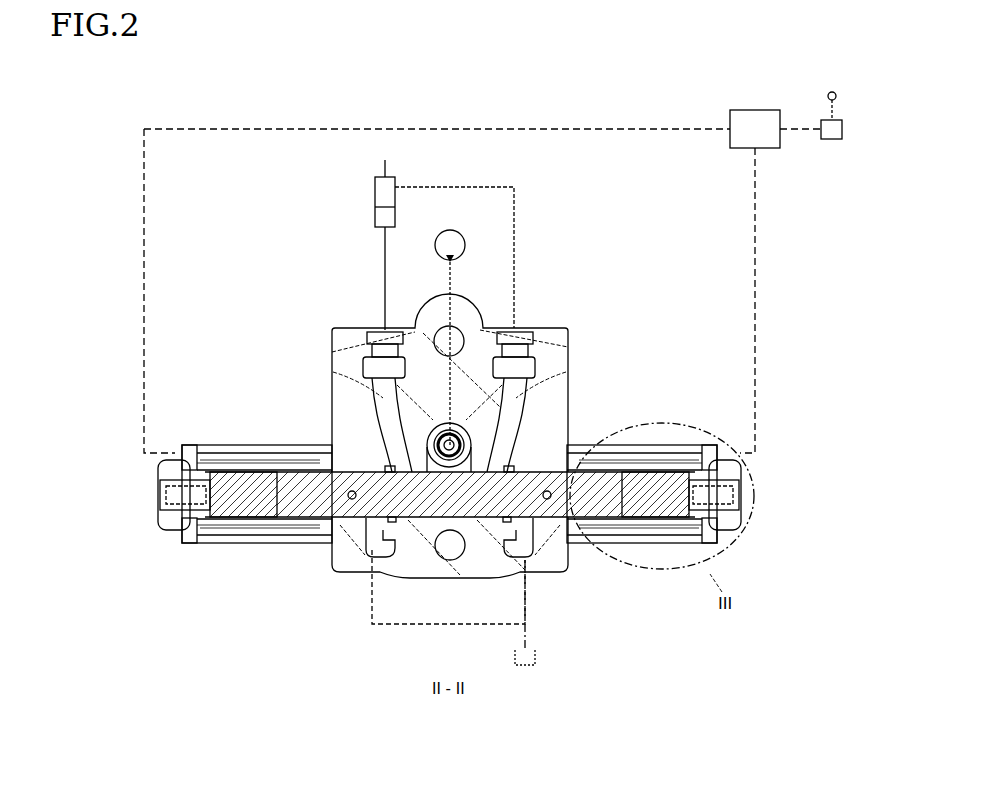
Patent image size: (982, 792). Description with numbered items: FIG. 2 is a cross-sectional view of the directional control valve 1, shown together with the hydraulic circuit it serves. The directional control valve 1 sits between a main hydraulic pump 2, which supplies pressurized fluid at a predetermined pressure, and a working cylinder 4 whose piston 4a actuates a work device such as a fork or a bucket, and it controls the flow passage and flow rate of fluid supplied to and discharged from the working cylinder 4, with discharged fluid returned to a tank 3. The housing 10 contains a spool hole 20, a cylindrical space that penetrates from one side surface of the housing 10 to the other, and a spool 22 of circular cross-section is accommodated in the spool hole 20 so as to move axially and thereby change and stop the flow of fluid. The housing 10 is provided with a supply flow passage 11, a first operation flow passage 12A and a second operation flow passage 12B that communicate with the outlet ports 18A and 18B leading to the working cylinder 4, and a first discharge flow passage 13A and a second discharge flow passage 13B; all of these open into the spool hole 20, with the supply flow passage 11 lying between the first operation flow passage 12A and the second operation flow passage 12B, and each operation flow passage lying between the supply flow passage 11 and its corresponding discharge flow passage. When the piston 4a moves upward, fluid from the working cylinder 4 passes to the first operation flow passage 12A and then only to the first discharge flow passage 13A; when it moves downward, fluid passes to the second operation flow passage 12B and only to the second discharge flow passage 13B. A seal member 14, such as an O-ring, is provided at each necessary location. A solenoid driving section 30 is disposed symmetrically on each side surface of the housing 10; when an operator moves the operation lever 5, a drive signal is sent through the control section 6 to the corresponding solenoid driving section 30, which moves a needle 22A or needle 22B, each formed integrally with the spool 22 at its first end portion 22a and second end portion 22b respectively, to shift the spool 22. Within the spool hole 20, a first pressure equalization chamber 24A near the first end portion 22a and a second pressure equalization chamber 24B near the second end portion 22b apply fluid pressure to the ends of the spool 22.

The directional control valve 1 is at (592, 318).
The main hydraulic pump 2 is at (462, 241).
The tank 3 is at (540, 660).
The working cylinder 4 is at (375, 185).
The piston 4a is at (375, 207).
The operation lever 5 is at (832, 140).
The control section 6 is at (742, 148).
The housing 10 is at (586, 340).
The supply flow passage 11 is at (430, 330).
The first operation flow passage 12A is at (554, 383).
The second operation flow passage 12B is at (346, 383).
The first discharge flow passage 13A is at (546, 561).
The second discharge flow passage 13B is at (354, 561).
The seal member 14 is at (349, 490).
The outlet port 18A is at (520, 326).
The outlet port 18B is at (383, 326).
The spool hole 20 is at (312, 540).
The spool 22 is at (452, 560).
The needle 22A is at (618, 543).
The needle 22B is at (286, 545).
The first end portion 22a is at (630, 447).
The second end portion 22b is at (272, 447).
The first pressure equalization chamber 24A is at (594, 449).
The second pressure equalization chamber 24B is at (306, 449).
The solenoid driving section 30 is at (218, 437).